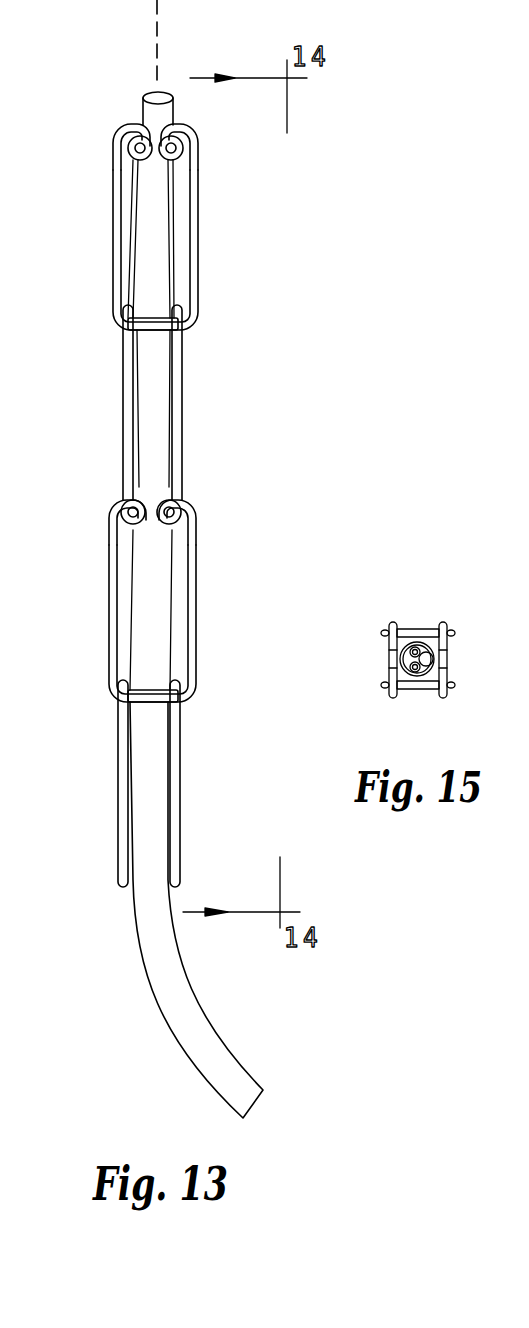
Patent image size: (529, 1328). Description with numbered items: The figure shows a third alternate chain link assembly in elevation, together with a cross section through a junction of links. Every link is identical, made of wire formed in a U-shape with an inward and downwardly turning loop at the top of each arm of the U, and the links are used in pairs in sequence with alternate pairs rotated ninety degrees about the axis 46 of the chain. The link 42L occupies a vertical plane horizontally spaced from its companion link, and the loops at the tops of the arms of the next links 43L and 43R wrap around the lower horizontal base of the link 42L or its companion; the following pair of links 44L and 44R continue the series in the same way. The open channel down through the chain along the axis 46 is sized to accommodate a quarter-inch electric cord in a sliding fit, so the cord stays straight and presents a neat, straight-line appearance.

In FIG. 13, the axis 46 is at (157, 18).
In FIG. 13, the link 42L is at (198, 230).
In FIG. 13, the link 43L is at (123, 428).
In FIG. 15, the link 43L is at (418, 633).
In FIG. 13, the link 43R is at (183, 420).
In FIG. 15, the link 43R is at (417, 689).
In FIG. 13, the link 44L is at (196, 602).
In FIG. 15, the link 44L is at (388, 667).
In FIG. 15, the link 44R is at (447, 657).